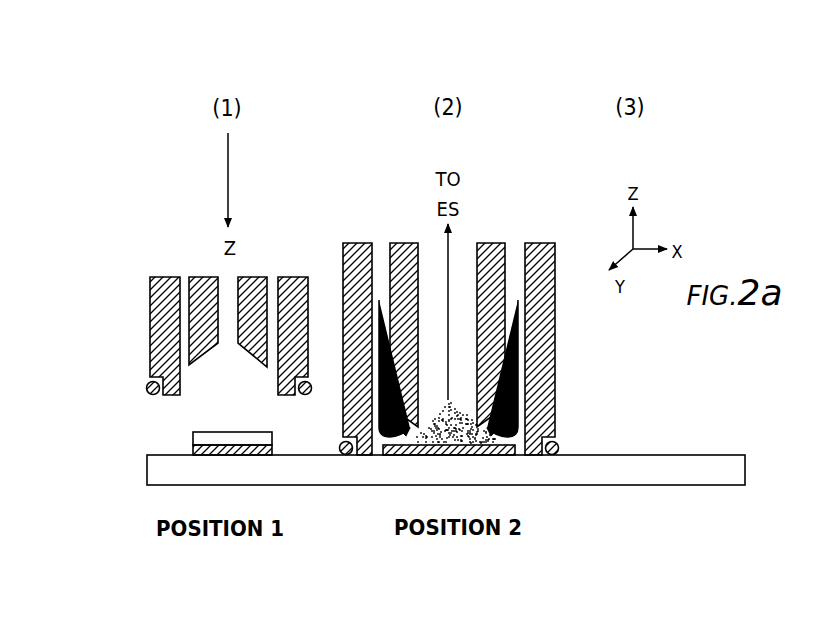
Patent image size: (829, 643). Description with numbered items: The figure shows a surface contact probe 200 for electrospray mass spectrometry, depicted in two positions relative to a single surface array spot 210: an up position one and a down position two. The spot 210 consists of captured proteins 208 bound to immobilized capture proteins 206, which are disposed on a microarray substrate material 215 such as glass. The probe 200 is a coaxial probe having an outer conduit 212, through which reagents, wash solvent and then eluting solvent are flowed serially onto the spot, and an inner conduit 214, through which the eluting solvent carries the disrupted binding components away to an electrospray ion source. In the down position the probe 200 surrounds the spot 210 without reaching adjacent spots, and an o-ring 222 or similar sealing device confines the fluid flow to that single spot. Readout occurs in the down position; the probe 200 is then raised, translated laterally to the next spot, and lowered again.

The surface contact probe 200 is at (342, 36).
The immobilized capture proteins 206 is at (193, 450).
The captured proteins 208 is at (193, 435).
The surface array spot 210 is at (63, 437).
The outer conduit 212 is at (183, 273).
The inner conduit 214 is at (230, 273).
The microarray substrate material 215 is at (695, 485).
The o-ring 222 is at (561, 454).